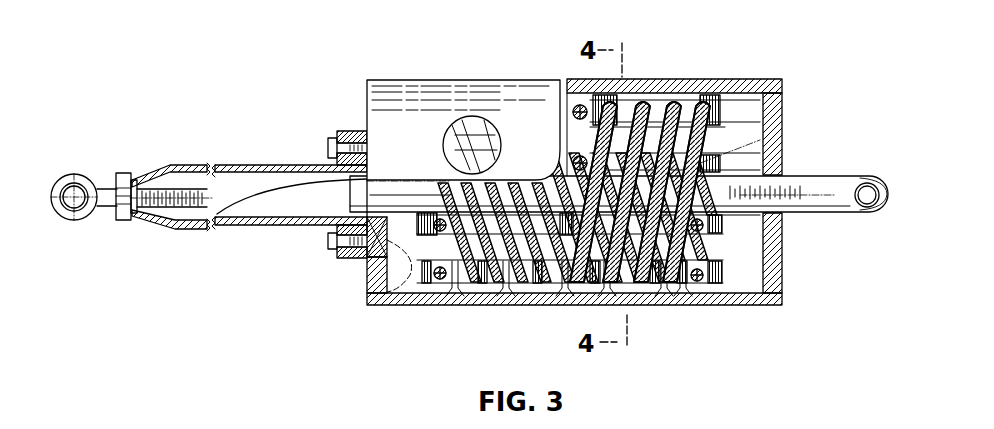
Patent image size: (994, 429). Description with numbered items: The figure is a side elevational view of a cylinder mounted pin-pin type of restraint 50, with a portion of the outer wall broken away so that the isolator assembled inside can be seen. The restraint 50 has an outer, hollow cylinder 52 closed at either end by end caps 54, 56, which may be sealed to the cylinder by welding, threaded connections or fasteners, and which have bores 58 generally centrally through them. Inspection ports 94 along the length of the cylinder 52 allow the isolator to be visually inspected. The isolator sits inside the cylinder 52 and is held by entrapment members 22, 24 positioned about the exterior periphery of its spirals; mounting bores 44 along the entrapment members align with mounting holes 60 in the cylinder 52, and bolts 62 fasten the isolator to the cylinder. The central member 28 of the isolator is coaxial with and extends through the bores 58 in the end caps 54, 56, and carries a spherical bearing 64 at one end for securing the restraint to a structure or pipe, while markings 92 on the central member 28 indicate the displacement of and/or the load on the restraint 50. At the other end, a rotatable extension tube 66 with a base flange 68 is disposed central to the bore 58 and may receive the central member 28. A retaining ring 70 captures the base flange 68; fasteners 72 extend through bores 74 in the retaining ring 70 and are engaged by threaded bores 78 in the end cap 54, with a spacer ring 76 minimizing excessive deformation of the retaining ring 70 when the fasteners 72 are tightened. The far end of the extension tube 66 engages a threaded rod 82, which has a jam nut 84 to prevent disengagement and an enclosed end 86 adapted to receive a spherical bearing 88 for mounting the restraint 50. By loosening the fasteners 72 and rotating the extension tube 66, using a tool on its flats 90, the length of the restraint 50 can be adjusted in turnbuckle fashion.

The restraint 50 is at (468, 27).
The inspection ports 94 is at (471, 80).
The outer, hollow cylinder 52 is at (701, 80).
The end cap 56 is at (783, 111).
The entrapment member 22 is at (770, 143).
The bores 58 is at (216, 218).
The central member 28 is at (840, 176).
The markings 92 is at (786, 214).
The spherical bearing 64 is at (868, 210).
The entrapment member 24 is at (717, 237).
The mounting bores 44 is at (716, 305).
The mounting holes 60 is at (704, 307).
The bolts 62 is at (686, 308).
The end cap 54 is at (433, 308).
The threaded bores 78 is at (384, 290).
The spacer ring 76 is at (348, 258).
The retaining ring 70 is at (344, 252).
The bores 74 is at (330, 243).
The fasteners 72 is at (330, 238).
The flats 90 is at (270, 165).
The extension tube 66 is at (306, 165).
The base flange 68 is at (370, 160).
The spherical bearing 88 is at (76, 185).
The threaded rod 82 is at (112, 181).
The enclosed end 86 is at (81, 228).
The jam nut 84 is at (125, 222).